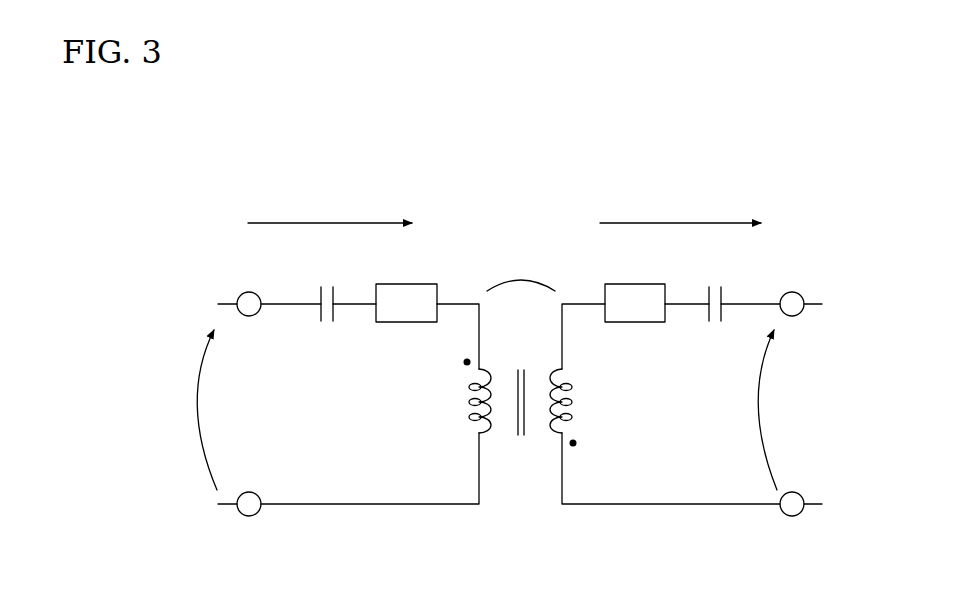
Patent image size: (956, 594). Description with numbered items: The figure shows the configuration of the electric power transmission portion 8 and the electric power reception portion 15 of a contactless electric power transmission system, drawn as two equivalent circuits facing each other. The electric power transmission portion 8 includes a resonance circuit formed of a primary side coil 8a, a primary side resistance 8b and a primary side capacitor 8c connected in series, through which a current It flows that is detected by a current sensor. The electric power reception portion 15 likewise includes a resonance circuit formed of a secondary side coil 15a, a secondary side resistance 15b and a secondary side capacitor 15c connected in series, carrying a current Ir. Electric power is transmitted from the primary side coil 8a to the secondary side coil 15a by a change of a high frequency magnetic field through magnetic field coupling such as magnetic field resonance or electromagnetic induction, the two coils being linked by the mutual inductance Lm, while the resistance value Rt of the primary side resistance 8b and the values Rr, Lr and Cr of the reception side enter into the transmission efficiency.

The electric power transmission portion 8 is at (214, 194).
The primary side coil 8a is at (485, 434).
The primary side resistance 8b is at (432, 284).
The primary side capacitor 8c is at (321, 292).
The electric power reception portion 15 is at (794, 194).
The secondary side coil 15a is at (556, 434).
The secondary side resistance 15b is at (606, 284).
The secondary side capacitor 15c is at (722, 293).